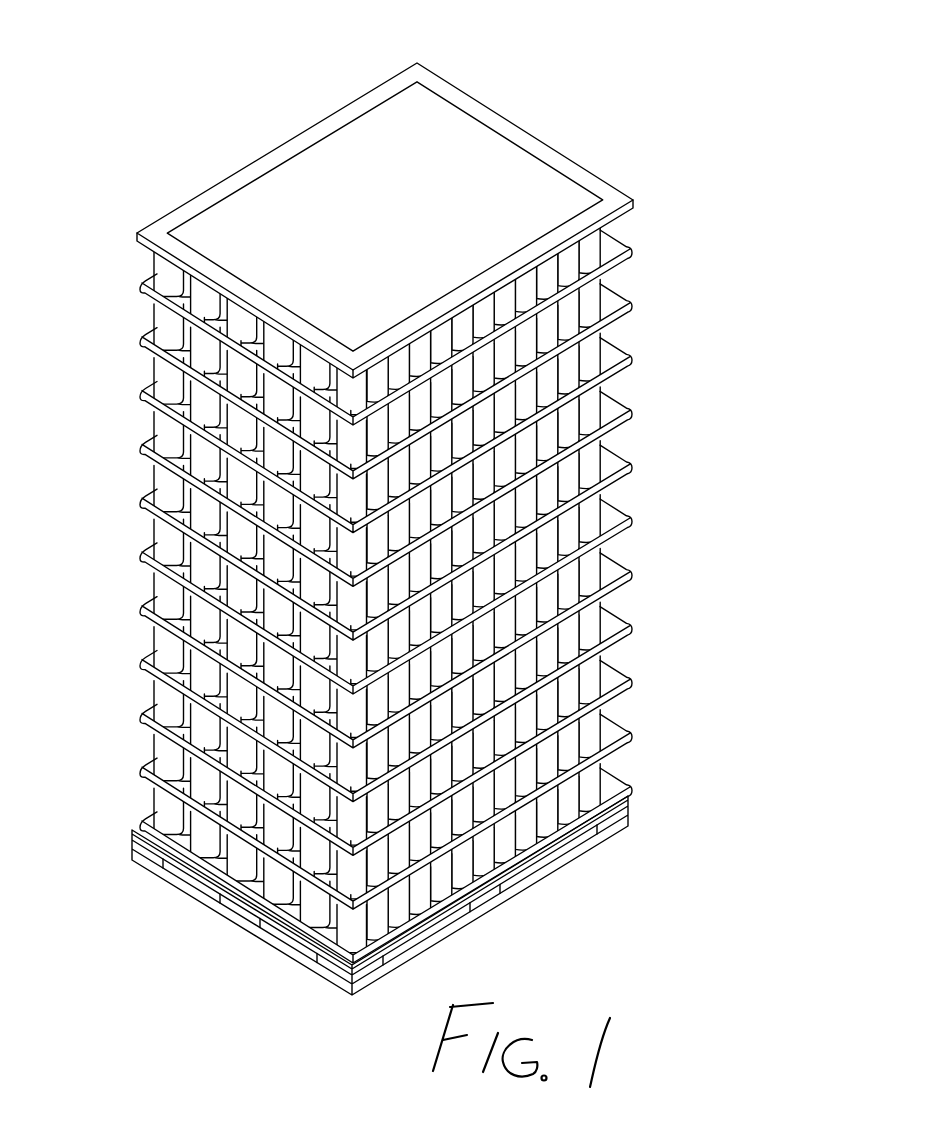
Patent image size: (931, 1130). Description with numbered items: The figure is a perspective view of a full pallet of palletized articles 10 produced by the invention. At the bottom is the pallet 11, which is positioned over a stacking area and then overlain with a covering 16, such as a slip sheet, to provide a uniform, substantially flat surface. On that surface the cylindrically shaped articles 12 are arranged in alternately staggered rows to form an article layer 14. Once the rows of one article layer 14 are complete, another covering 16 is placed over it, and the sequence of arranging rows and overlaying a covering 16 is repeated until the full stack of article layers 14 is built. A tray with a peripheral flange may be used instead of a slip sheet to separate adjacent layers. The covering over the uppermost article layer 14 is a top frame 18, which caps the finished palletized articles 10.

The palletized articles 10 is at (752, 84).
The pallet 11 is at (633, 813).
The articles 12 is at (155, 265).
The article layer 14 is at (650, 232).
The covering 16 is at (615, 250).
The top frame 18 is at (502, 108).